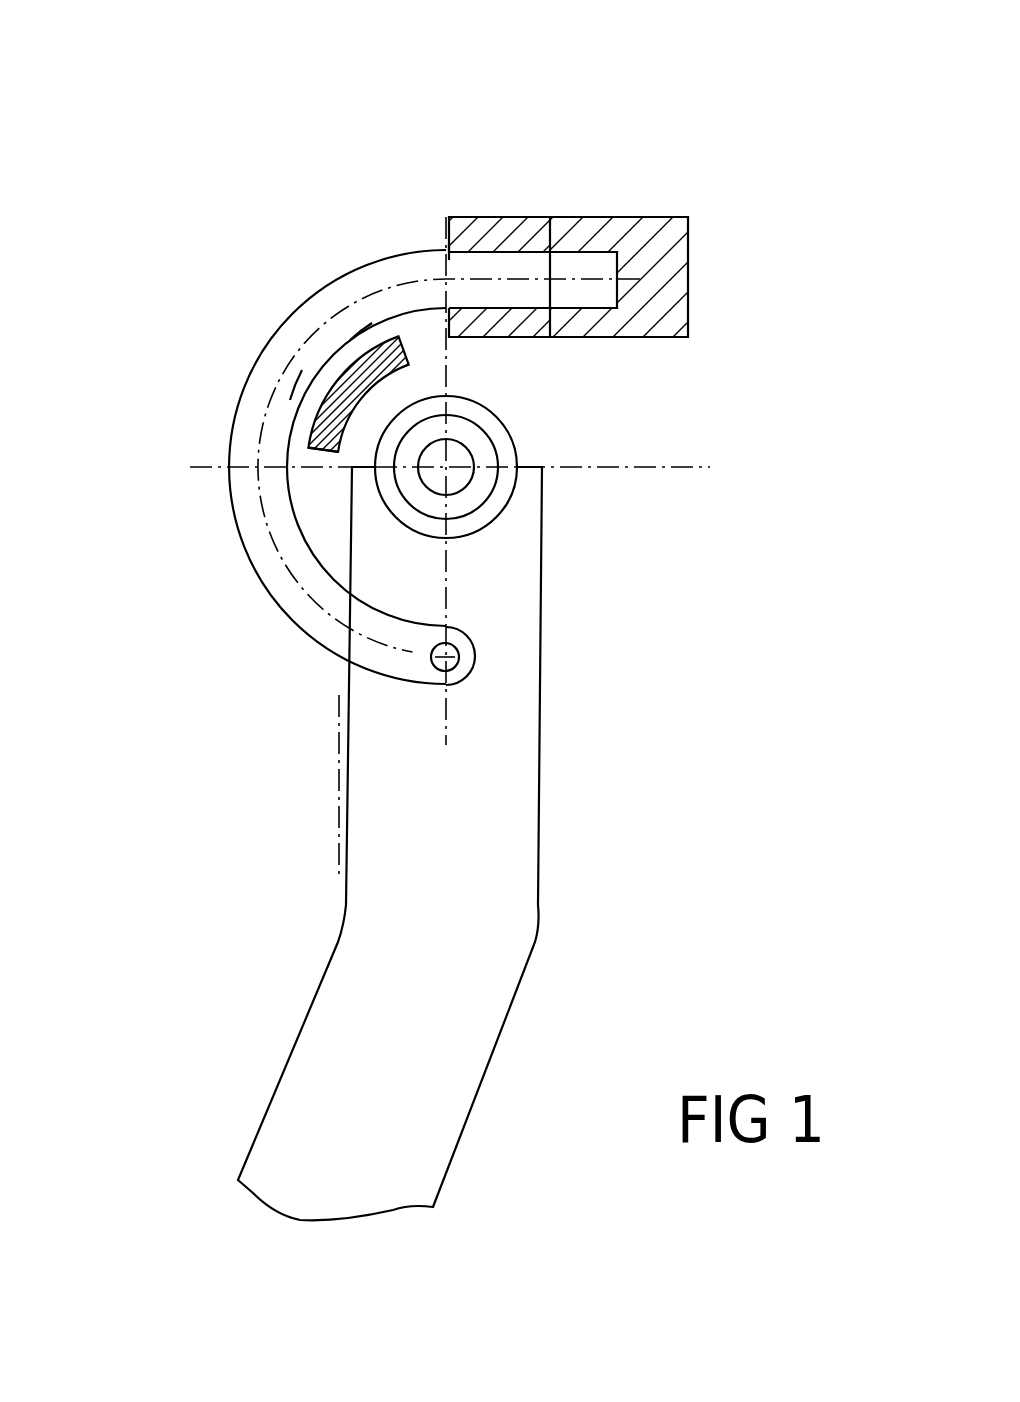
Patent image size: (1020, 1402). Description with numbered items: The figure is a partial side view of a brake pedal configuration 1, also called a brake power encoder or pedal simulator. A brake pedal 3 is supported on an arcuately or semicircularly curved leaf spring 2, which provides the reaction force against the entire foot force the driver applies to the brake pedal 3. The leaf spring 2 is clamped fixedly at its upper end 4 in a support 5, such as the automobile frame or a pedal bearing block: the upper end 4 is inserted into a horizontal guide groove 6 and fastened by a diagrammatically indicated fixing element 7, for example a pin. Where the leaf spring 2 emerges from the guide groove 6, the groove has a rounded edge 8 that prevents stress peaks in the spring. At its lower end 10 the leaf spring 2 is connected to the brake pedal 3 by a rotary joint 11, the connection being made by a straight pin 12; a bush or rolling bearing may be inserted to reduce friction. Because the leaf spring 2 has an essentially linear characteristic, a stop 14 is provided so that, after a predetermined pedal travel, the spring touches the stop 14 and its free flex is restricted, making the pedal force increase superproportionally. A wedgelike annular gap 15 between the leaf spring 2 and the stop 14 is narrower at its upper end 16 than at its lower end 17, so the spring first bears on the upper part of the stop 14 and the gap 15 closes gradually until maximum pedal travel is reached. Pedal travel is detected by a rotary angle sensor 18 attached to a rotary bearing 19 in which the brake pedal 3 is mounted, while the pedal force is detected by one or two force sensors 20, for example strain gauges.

The brake pedal configuration 1 is at (437, 157).
The leaf spring 2 is at (347, 263).
The brake pedal 3 is at (540, 905).
The upper end 4 is at (507, 268).
The support 5 is at (688, 218).
The guide groove 6 is at (447, 244).
The fixing element 7 is at (553, 216).
The rounded edge 8 is at (492, 334).
The lower end 10 is at (435, 677).
The rotary joint 11 is at (462, 668).
The straight pin 12 is at (462, 655).
The stop 14 is at (347, 370).
The wedgelike gap 15 is at (310, 383).
The upper end 16 is at (370, 327).
The lower end 17 is at (300, 445).
The rotary angle sensor 18 is at (498, 450).
The rotary bearing 19 is at (455, 469).
The force sensors 20 is at (338, 778).